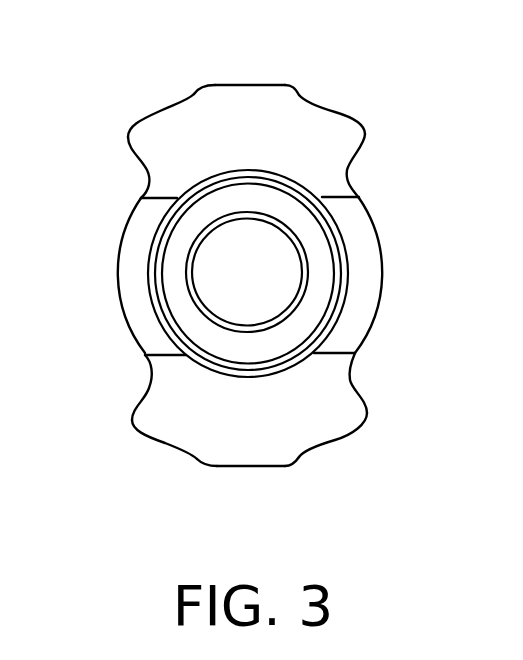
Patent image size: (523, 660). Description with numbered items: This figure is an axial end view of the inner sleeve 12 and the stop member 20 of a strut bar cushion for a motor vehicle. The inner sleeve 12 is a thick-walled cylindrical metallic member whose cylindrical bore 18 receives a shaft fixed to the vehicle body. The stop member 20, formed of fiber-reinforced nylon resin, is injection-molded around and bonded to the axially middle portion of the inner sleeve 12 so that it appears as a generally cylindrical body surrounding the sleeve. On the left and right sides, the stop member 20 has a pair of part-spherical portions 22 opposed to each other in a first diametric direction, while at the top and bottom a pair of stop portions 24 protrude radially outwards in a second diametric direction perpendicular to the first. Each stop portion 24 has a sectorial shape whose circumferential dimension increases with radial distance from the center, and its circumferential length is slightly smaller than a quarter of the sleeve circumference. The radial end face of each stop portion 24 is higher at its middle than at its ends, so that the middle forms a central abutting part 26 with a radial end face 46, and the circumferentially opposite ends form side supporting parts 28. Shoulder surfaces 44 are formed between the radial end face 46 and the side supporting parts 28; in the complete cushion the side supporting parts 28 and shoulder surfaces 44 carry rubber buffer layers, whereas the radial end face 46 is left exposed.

The inner sleeve 12 is at (202, 330).
The cylindrical bore 18 is at (253, 216).
The stop member 20 is at (404, 241).
The part-spherical portions 22 is at (118, 305).
The stop portions 24 is at (108, 158).
The central abutting part 26 is at (252, 92).
The side supporting parts 28 is at (168, 107).
The shoulder surfaces 44 is at (195, 92).
The radial end face 46 is at (225, 83).